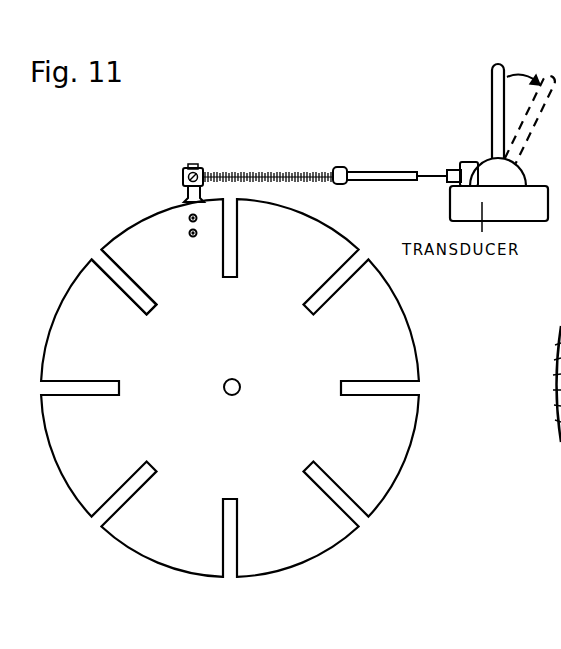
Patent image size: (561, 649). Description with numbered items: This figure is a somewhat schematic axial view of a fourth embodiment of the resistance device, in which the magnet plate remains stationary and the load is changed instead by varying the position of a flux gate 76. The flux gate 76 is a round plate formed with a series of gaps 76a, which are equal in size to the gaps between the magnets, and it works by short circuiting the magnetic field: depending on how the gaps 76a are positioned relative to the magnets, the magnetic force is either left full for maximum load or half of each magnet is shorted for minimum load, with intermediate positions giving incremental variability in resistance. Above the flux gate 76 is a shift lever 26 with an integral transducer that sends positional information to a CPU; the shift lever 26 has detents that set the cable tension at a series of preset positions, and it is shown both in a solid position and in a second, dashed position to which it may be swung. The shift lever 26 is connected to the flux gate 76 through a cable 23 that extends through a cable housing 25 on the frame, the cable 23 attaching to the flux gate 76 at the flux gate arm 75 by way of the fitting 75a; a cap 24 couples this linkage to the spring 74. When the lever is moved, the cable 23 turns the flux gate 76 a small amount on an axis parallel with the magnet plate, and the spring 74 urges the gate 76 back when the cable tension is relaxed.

The cable 23 is at (432, 172).
The spring end cap 24 is at (340, 166).
The cable housing 25 is at (367, 172).
The shift lever 26 is at (495, 67).
The spring 74 is at (250, 182).
The flux gate arm 75 is at (186, 194).
The clevis 75a is at (185, 174).
The flux gate 76 is at (230, 388).
The gaps 76a is at (106, 272).